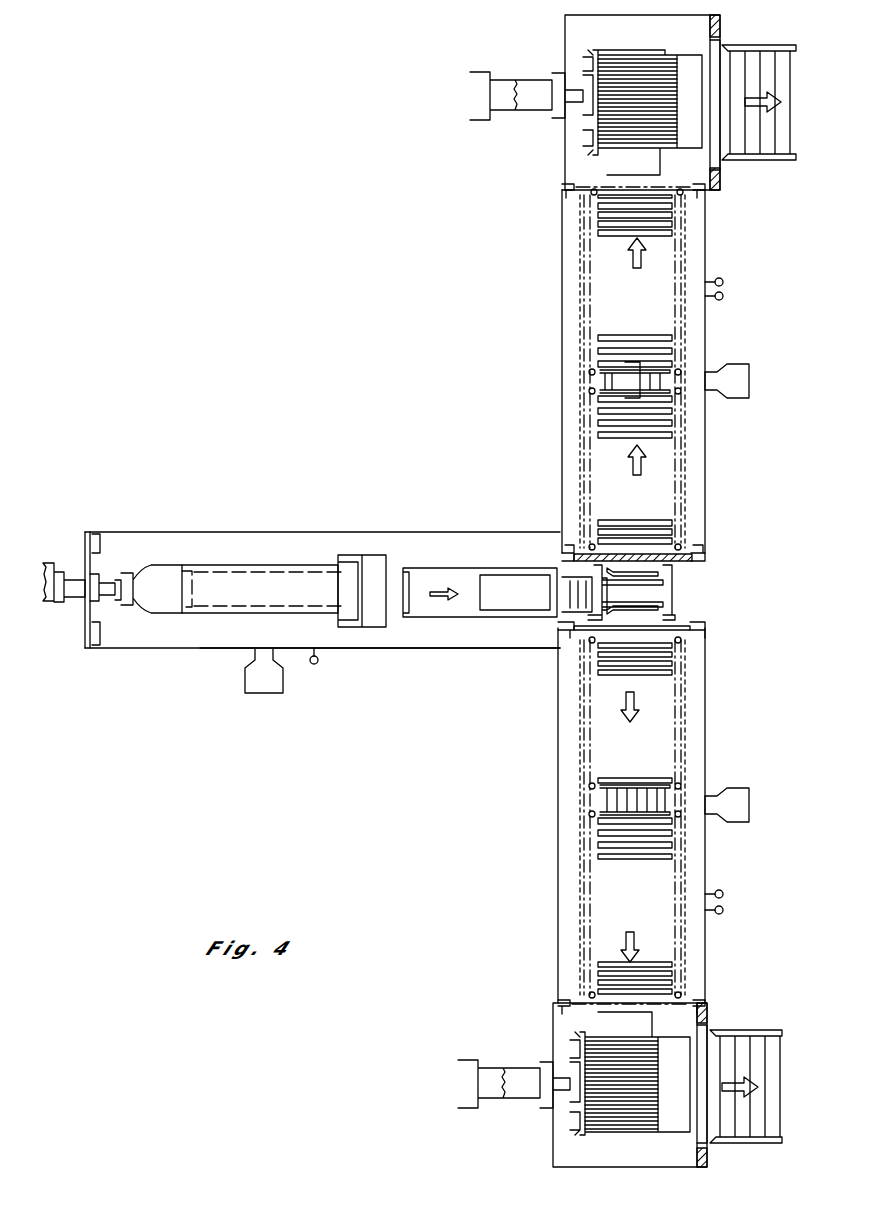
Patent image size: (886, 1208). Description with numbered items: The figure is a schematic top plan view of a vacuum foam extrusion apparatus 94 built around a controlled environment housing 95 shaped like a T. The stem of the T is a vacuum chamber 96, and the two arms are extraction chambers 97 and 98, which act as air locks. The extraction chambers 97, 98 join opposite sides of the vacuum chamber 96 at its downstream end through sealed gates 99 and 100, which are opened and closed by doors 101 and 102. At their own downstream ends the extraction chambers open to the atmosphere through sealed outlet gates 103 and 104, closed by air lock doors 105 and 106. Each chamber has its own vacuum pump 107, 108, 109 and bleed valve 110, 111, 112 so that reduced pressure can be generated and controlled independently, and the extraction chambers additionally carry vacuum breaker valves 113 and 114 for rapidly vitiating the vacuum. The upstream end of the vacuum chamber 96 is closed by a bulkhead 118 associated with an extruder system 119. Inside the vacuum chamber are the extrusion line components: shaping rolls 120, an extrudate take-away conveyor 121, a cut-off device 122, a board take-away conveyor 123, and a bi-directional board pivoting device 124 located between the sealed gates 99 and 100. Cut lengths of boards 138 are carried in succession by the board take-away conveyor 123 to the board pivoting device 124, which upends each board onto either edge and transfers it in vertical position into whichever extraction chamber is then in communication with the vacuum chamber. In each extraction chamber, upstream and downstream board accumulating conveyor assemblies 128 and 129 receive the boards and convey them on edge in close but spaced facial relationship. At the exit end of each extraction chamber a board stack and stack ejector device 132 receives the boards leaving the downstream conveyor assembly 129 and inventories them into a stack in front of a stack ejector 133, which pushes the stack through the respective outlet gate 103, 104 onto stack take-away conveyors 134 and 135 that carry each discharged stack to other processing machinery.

The vacuum foam extrusion apparatus 94 is at (383, 528).
The controlled environment housing 95 is at (465, 658).
The vacuum chamber 96 is at (187, 532).
The extraction chamber 97 is at (562, 285).
The extraction chamber 98 is at (558, 846).
The sealed gate 99 is at (696, 549).
The sealed gate 100 is at (700, 639).
The door 101 is at (566, 535).
The door 102 is at (564, 646).
The sealed outlet gate 103 is at (712, 170).
The sealed outlet gate 104 is at (709, 1031).
The air lock door 105 is at (720, 67).
The air lock door 106 is at (692, 1144).
The vacuum pump 107 is at (245, 689).
The vacuum pump 108 is at (744, 372).
The vacuum pump 109 is at (732, 792).
The bleed valve 110 is at (313, 673).
The bleed valve 111 is at (721, 282).
The bleed valve 112 is at (716, 896).
The vacuum breaker valve 113 is at (726, 298).
The vacuum breaker valve 114 is at (720, 912).
The bulkhead 118 is at (87, 556).
The extruder system 119 is at (50, 628).
The shaping rolls 120 is at (128, 571).
The extrudate take-away conveyor 121 is at (231, 567).
The cut-off device 122 is at (384, 628).
The board take-away conveyor 123 is at (447, 550).
The board pivoting device 124 is at (672, 586).
The upstream board accumulating conveyor assembly 128 is at (690, 468).
The downstream board accumulating conveyor assembly 129 is at (580, 250).
The board stack and stack ejector device 132 is at (574, 44).
The stack ejector 133 is at (562, 130).
The stack take-away conveyor 134 is at (787, 167).
The stack take-away conveyor 135 is at (754, 1026).
The boards 138 is at (511, 572).